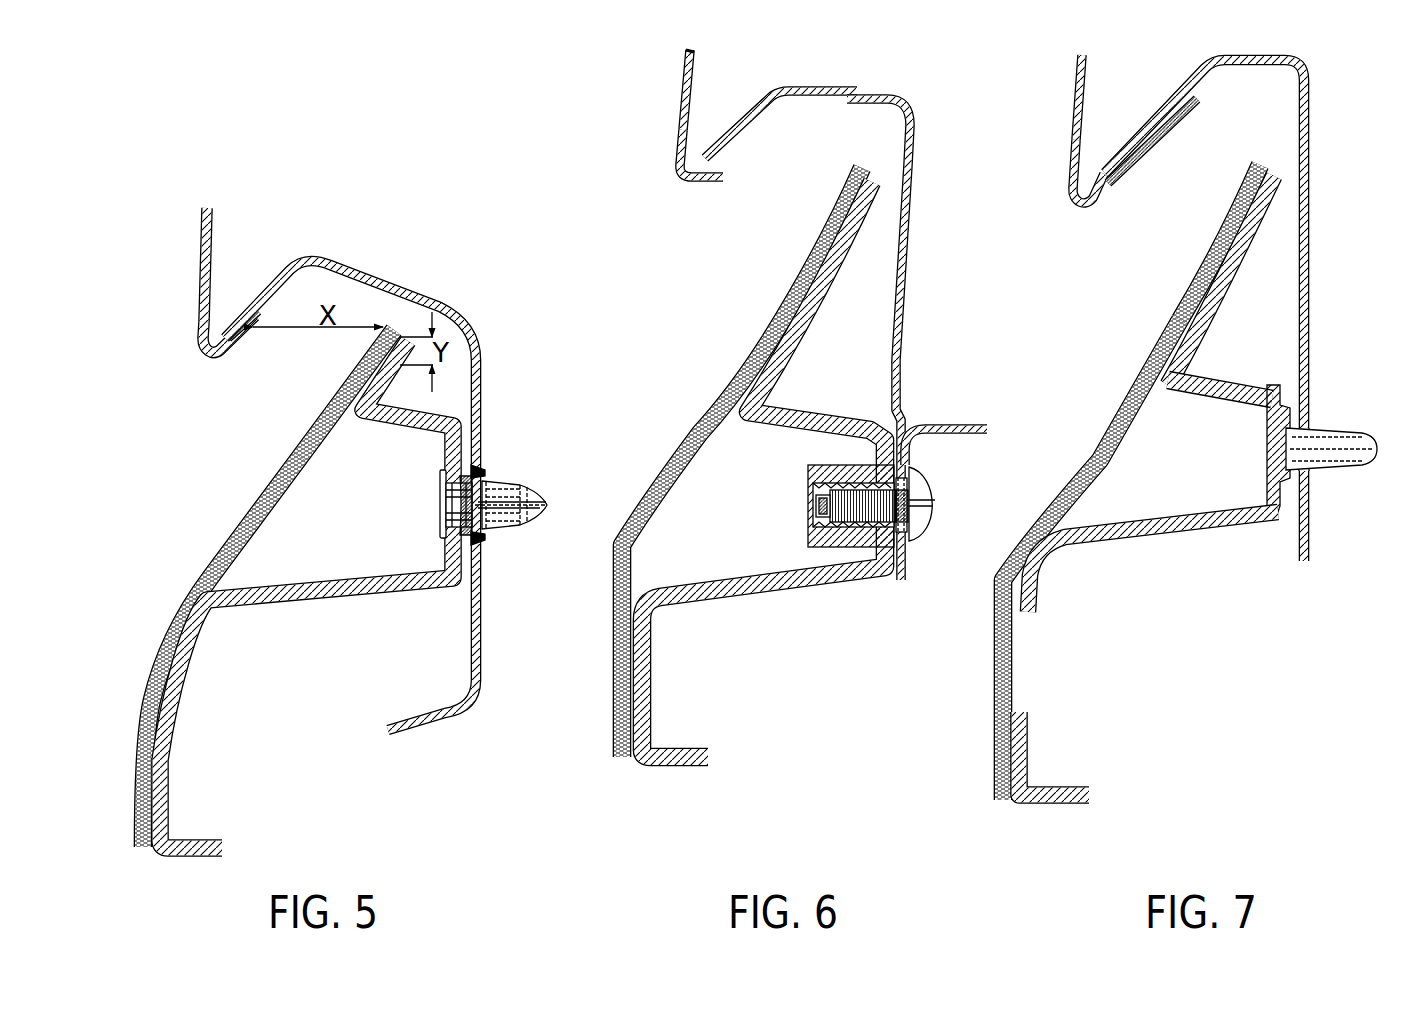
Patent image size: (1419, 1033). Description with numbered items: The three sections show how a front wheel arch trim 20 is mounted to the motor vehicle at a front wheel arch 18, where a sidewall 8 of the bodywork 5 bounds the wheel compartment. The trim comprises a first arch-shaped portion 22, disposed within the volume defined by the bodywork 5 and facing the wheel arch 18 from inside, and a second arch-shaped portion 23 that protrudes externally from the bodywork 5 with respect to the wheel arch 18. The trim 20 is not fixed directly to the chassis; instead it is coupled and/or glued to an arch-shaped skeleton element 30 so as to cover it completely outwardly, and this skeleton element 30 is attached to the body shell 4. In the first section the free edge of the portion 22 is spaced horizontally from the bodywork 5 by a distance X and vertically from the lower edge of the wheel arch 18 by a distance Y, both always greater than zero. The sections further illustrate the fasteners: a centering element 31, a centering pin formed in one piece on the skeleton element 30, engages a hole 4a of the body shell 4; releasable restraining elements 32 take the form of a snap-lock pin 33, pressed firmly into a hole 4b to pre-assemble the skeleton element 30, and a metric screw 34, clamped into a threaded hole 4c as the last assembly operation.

In FIG. 5, the body shell 4 is at (396, 495).
In FIG. 6, the body shell 4 is at (846, 335).
In FIG. 7, the body shell 4 is at (1251, 310).
In FIG. 7, the hole 4a is at (1310, 440).
In FIG. 5, the hole 4b is at (481, 543).
In FIG. 6, the threaded hole 4c is at (906, 532).
In FIG. 5, the bodywork 5 is at (187, 301).
In FIG. 6, the bodywork 5 is at (655, 139).
In FIG. 7, the bodywork 5 is at (1044, 148).
In FIG. 5, the sidewall 8 is at (200, 230).
In FIG. 6, the sidewall 8 is at (676, 88).
In FIG. 7, the sidewall 8 is at (1073, 78).
In FIG. 5, the front wheel arch 18 is at (198, 353).
In FIG. 6, the front wheel arch 18 is at (677, 185).
In FIG. 7, the front wheel arch 18 is at (1073, 202).
In FIG. 5, the front wheel arch trim 20 is at (216, 588).
In FIG. 6, the front wheel arch trim 20 is at (698, 447).
In FIG. 7, the front wheel arch trim 20 is at (1084, 478).
In FIG. 5, the first arch-shaped portion 22 is at (372, 362).
In FIG. 6, the first arch-shaped portion 22 is at (834, 187).
In FIG. 7, the first arch-shaped portion 22 is at (1242, 203).
In FIG. 5, the second arch-shaped portion 23 is at (152, 660).
In FIG. 6, the second arch-shaped portion 23 is at (689, 450).
In FIG. 7, the second arch-shaped portion 23 is at (1071, 475).
In FIG. 5, the skeleton element 30 is at (259, 607).
In FIG. 6, the skeleton element 30 is at (770, 606).
In FIG. 7, the skeleton element 30 is at (1156, 542).
In FIG. 7, the centering element 31 is at (1333, 450).
In FIG. 5, the releasable restraining element 32 is at (517, 463).
In FIG. 6, the releasable restraining element 32 is at (922, 492).
In FIG. 5, the snap-lock pin 33 is at (514, 490).
In FIG. 6, the metric screw 34 is at (913, 505).